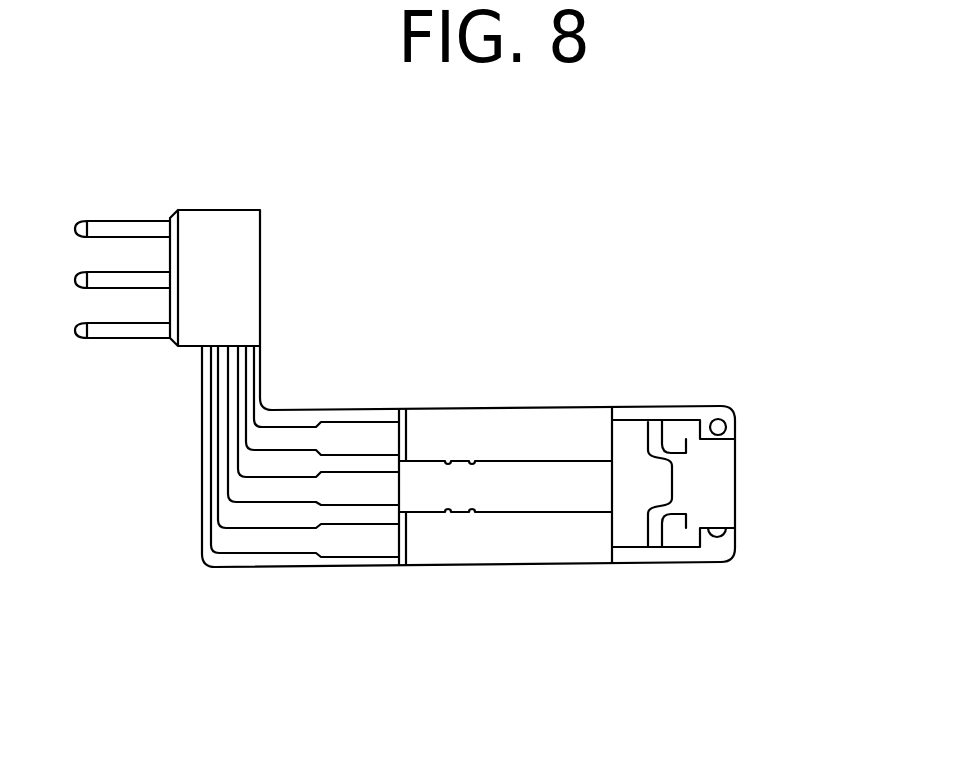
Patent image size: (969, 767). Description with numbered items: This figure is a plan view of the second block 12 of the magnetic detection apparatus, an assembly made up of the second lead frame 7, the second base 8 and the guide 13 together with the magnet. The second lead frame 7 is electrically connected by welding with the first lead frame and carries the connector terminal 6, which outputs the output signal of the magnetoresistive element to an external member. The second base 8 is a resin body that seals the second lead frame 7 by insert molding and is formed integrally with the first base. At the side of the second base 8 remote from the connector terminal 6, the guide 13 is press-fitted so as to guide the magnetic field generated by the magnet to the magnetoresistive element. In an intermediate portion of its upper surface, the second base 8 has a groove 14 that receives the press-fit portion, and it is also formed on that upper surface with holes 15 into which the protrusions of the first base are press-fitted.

The connector terminal 6 is at (107, 338).
The second lead frame 7 is at (347, 412).
The second base 8 is at (572, 418).
The second block 12 is at (521, 363).
The guide 13 is at (728, 484).
The groove 14 is at (520, 462).
The holes 15 is at (717, 425).